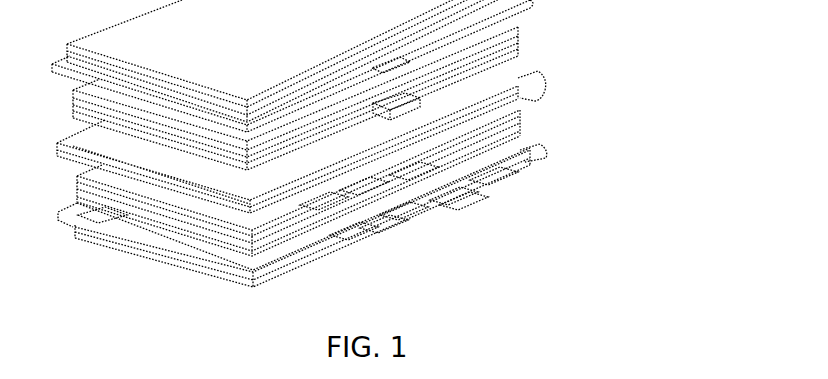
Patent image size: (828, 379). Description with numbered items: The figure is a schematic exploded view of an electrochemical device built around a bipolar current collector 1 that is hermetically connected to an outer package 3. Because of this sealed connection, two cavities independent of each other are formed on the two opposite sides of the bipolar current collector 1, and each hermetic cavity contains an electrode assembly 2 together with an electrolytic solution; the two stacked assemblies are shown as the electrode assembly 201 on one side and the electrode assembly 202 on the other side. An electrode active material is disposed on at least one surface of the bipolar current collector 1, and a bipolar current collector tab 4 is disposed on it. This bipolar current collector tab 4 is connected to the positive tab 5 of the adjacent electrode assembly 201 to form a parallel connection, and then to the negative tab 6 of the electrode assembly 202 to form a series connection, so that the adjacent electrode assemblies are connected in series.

The bipolar current collector 1 is at (538, 100).
The electrode assembly 2 is at (634, 23).
The electrode assembly 201 is at (527, 35).
The electrode assembly 202 is at (653, 143).
The outer package 3 is at (313, 263).
The bipolar current collector tab 4 is at (485, 190).
The positive tab 5 is at (452, 202).
The negative tab 6 is at (378, 233).